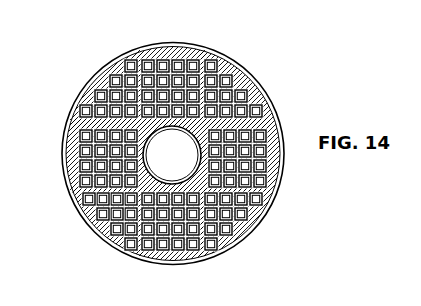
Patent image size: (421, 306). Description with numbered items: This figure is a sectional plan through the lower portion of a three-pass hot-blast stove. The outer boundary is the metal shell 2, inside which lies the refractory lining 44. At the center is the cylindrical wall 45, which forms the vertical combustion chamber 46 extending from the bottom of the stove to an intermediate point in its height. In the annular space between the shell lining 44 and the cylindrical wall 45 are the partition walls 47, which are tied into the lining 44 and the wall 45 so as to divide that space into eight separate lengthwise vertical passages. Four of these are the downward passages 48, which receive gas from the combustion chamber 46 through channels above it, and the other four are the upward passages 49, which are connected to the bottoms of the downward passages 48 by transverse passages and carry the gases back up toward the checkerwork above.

The metal shell 2 is at (165, 44).
The refractory lining 44 is at (83, 91).
The cylindrical wall 45 is at (191, 128).
The vertical combustion chamber 46 is at (172, 155).
The partition walls 47 is at (225, 82).
The downward passages 48 is at (190, 65).
The upward passages 49 is at (120, 68).